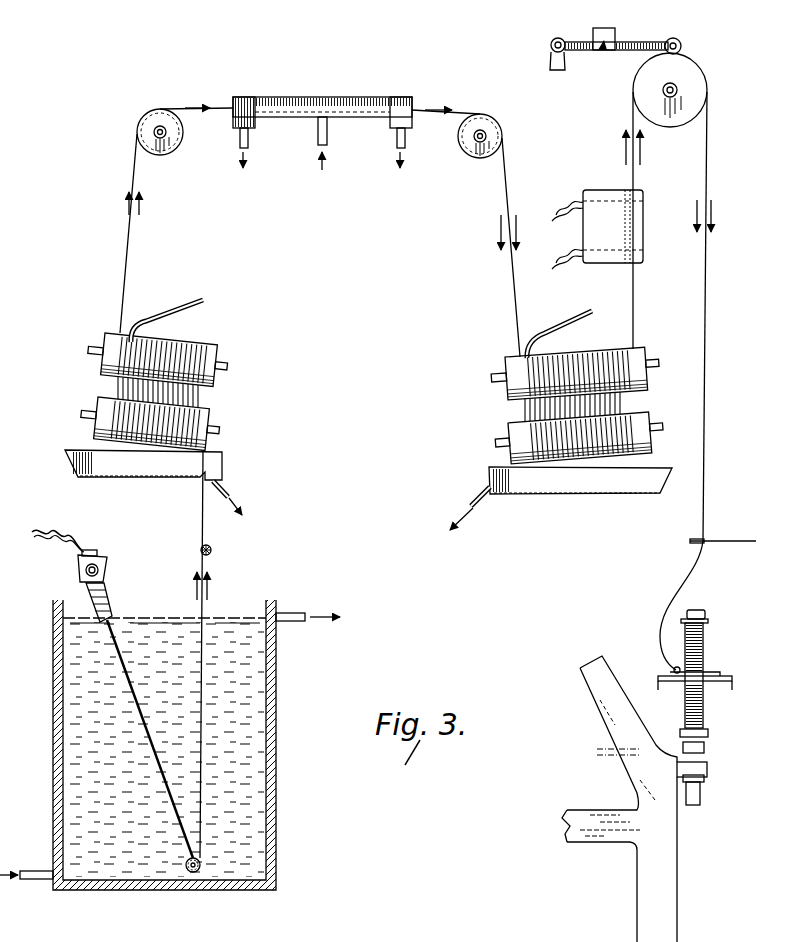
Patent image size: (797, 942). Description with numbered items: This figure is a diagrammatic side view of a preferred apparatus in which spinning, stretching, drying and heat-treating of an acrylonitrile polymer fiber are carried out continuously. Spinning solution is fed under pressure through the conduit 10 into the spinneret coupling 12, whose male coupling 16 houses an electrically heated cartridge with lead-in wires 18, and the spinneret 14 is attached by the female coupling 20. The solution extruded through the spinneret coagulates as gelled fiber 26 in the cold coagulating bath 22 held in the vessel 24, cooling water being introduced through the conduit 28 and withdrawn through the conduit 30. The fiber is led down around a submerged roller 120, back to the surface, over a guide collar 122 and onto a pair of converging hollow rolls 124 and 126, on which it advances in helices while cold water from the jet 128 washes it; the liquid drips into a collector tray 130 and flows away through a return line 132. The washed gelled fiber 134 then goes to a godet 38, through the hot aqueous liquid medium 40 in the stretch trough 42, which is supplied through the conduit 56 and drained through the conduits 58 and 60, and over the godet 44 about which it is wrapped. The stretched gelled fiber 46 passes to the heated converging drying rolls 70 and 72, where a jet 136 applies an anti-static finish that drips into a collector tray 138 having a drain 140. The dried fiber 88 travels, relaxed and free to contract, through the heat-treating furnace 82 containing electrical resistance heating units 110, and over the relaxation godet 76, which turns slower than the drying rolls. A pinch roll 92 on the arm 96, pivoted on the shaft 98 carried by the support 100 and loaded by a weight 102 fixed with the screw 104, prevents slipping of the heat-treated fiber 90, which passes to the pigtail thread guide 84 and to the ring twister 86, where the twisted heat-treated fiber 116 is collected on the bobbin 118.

The conduit 10 is at (78, 568).
The spinneret coupling 12 is at (90, 550).
The spinneret 14 is at (63, 618).
The male coupling 16 is at (107, 565).
The lead-in wires 18 is at (34, 534).
The female coupling 20 is at (110, 600).
The coagulating bath 22 is at (63, 725).
The vessel 24 is at (277, 680).
The fiber 26 is at (123, 670).
The conduit 28 is at (33, 880).
The conduit 30 is at (290, 610).
The godet 38 is at (162, 152).
The hot aqueous liquid medium 40 is at (385, 104).
The stretch trough 42 is at (290, 96).
The godet 44 is at (496, 128).
The stretched, gelled fiber 46 is at (505, 192).
The conduit 56 is at (327, 146).
The conduit 58 is at (249, 148).
The conduit 60 is at (405, 148).
The drying roll 70 is at (505, 360).
The drying roll 72 is at (508, 432).
The relaxation godet 76 is at (704, 82).
The heat-treating furnace 82 is at (580, 189).
The pigtail thread guide 84 is at (690, 541).
The ring twister 86 is at (715, 692).
The dried fiber 88 is at (636, 325).
The heat-treated fiber 90 is at (632, 110).
The pinch roll 92 is at (683, 44).
The arm 96 is at (638, 42).
The shaft 98 is at (551, 42).
The support 100 is at (549, 63).
The weight 102 is at (595, 30).
The screw 104 is at (603, 50).
The electrical resistance heating units 110 is at (641, 190).
The twisted, heat-treated fiber 116 is at (712, 665).
The bobbin 118 is at (706, 618).
The submerged roller 120 is at (185, 875).
The guide collar 122 is at (213, 550).
The converging roll 124 is at (105, 333).
The converging roll 126 is at (98, 404).
The jet 128 is at (172, 312).
The collector tray 130 is at (160, 477).
The return line 132 is at (229, 490).
The washed, gelled fiber 134 is at (130, 245).
The jet 136 is at (614, 300).
The collector tray 138 is at (582, 497).
The drain 140 is at (482, 507).